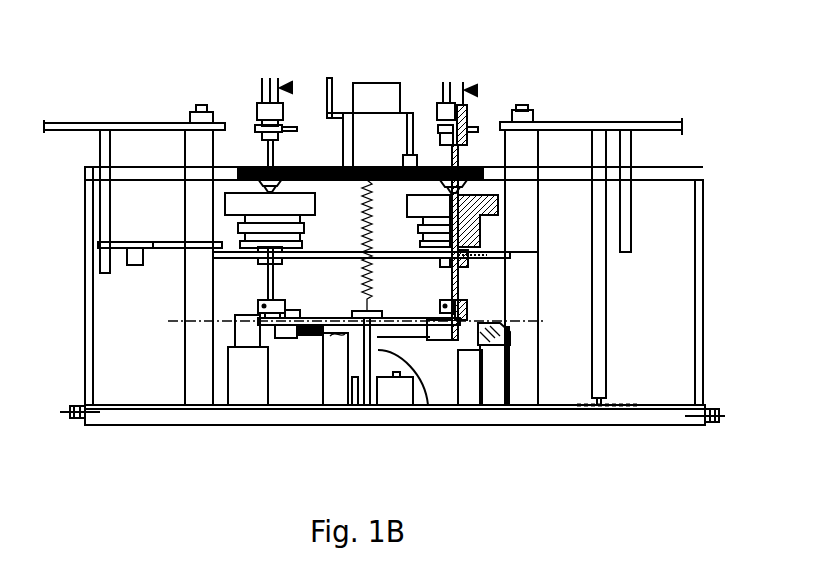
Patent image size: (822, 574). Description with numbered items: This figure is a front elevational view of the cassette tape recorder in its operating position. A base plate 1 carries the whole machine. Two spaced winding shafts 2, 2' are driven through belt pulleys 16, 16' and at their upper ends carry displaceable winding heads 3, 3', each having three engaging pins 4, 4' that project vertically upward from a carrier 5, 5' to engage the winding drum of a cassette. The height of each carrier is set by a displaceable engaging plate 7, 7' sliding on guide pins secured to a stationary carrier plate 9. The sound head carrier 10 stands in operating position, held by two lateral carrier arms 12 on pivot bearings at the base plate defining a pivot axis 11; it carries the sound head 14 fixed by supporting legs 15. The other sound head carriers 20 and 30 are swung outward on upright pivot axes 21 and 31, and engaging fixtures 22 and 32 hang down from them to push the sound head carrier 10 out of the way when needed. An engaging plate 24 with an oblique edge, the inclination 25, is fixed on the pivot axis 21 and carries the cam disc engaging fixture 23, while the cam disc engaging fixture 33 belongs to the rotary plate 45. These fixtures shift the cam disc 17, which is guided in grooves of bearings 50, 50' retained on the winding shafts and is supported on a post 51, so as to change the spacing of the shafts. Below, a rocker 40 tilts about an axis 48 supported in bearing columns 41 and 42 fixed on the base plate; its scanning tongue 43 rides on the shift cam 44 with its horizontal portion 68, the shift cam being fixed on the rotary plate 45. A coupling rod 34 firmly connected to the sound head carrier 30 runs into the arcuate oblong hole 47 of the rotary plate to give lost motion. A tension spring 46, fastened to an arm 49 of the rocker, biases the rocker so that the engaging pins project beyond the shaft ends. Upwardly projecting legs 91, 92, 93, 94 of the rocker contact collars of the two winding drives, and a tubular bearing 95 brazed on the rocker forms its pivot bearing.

The base plate 1 is at (158, 412).
The winding shaft 2 is at (247, 171).
The winding shaft 2' is at (439, 182).
The winding head 3 is at (295, 58).
The winding head 3' is at (476, 84).
The engaging pins 4 is at (270, 63).
The engaging pins 4' is at (453, 64).
The carrier 5 is at (262, 75).
The carrier 5' is at (478, 84).
The engaging plate 7 is at (296, 82).
The engaging plate 7' is at (506, 78).
The carrier plate 9 is at (333, 181).
The sound head carrier 10 is at (557, 177).
The pivot axis 11 is at (60, 410).
The carrier arms 12 is at (92, 343).
The sound head 14 is at (368, 82).
The supporting legs 15 is at (408, 141).
The belt pulley 16 is at (281, 220).
The belt pulley 16' is at (439, 221).
The cam disc 17 is at (328, 258).
The sound head carrier 20 is at (72, 122).
The pivot axis 21 is at (195, 148).
The engaging fixture 22 is at (108, 148).
The cam disc engaging fixture 23 is at (128, 258).
The engaging plate 24 is at (152, 250).
The inclination 25 is at (108, 258).
The sound head carrier 30 is at (623, 130).
The pivot axis 31 is at (522, 145).
The engaging fixture 32 is at (625, 155).
The cam disc engaging fixture 33 is at (488, 387).
The coupling rod 34 is at (600, 348).
The rocker 40 is at (302, 337).
The bearing column 41 is at (248, 390).
The bearing column 42 is at (472, 392).
The scanning tongue 43 is at (430, 405).
The shift cam 44 is at (367, 392).
The rotary plate 45 is at (563, 409).
The tension spring 46 is at (370, 280).
The oblong hole 47 is at (608, 408).
The axis 48 is at (545, 321).
The arm 49 is at (377, 311).
The bearing 50 is at (252, 279).
The bearing 50' is at (469, 281).
The post 51 is at (335, 392).
The horizontal portion 68 is at (387, 390).
The leg 91 is at (288, 308).
The leg 92 is at (288, 338).
The leg 93 is at (440, 306).
The leg 94 is at (438, 340).
The tubular bearing 95 is at (335, 318).